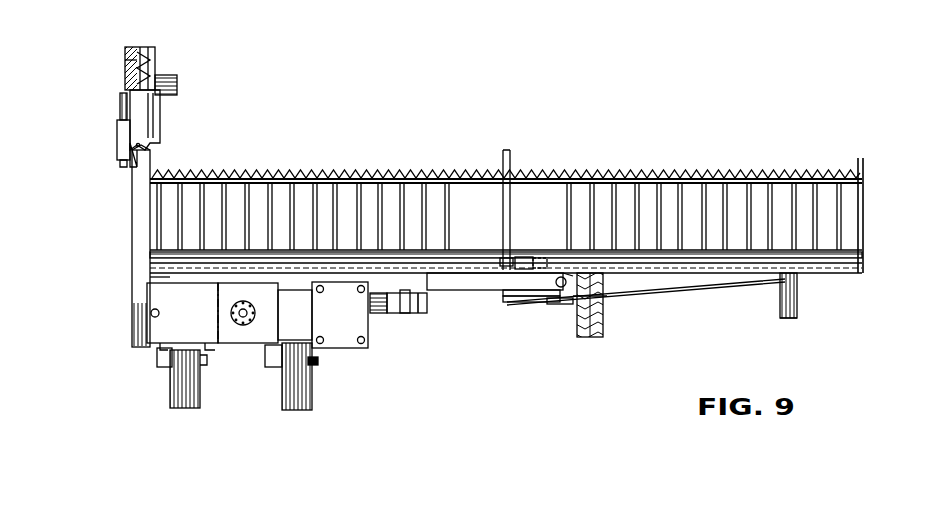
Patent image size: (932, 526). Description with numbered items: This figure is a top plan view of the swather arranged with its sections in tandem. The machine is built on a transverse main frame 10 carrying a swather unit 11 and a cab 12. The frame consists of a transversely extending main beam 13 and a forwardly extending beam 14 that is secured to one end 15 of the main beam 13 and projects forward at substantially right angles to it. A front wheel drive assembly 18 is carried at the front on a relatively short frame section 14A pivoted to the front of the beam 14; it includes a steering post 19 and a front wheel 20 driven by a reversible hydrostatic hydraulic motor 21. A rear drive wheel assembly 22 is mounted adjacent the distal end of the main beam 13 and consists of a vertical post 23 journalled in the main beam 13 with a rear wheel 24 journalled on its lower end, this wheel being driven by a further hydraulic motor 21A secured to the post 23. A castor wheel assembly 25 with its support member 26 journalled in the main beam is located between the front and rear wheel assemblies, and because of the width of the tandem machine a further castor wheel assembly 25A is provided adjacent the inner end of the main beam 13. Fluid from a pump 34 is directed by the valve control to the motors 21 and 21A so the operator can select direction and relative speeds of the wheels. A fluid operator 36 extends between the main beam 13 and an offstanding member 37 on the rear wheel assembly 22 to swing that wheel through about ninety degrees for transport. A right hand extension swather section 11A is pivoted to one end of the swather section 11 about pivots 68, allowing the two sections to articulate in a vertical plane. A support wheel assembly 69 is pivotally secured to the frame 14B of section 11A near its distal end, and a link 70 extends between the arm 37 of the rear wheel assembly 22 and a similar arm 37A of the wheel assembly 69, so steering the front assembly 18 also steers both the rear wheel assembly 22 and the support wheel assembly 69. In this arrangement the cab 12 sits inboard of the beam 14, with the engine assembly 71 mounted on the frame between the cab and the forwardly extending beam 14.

The main frame 10 is at (448, 293).
The swather unit 11 is at (339, 179).
The right hand extension swather section 11A is at (654, 180).
The cab 12 is at (364, 308).
The main beam 13 is at (473, 288).
The forwardly extending beam 14 is at (140, 215).
The frame section 14A is at (143, 126).
The frame of extension section 14B is at (862, 270).
The end of main beam 15 is at (152, 278).
The front wheel drive assembly 18 is at (158, 48).
The steering post 19 is at (130, 90).
The front wheel 20 is at (138, 47).
The hydraulic motor 21 is at (178, 87).
The further hydraulic motor 21A is at (570, 300).
The rear drive wheel assembly 22 is at (603, 318).
The vertical post 23 is at (567, 283).
The rear wheel 24 is at (590, 337).
The castor wheel assembly 25 is at (312, 385).
The further castor wheel assembly 25A is at (209, 384).
The support member 26 is at (318, 361).
The pump 34 is at (255, 318).
The fluid operator 36 is at (518, 296).
The offstanding member 37 is at (548, 303).
The arm 37A is at (798, 292).
The pivots 68 is at (510, 153).
The support wheel assembly 69 is at (786, 318).
The link 70 is at (672, 292).
The engine assembly 71 is at (150, 300).